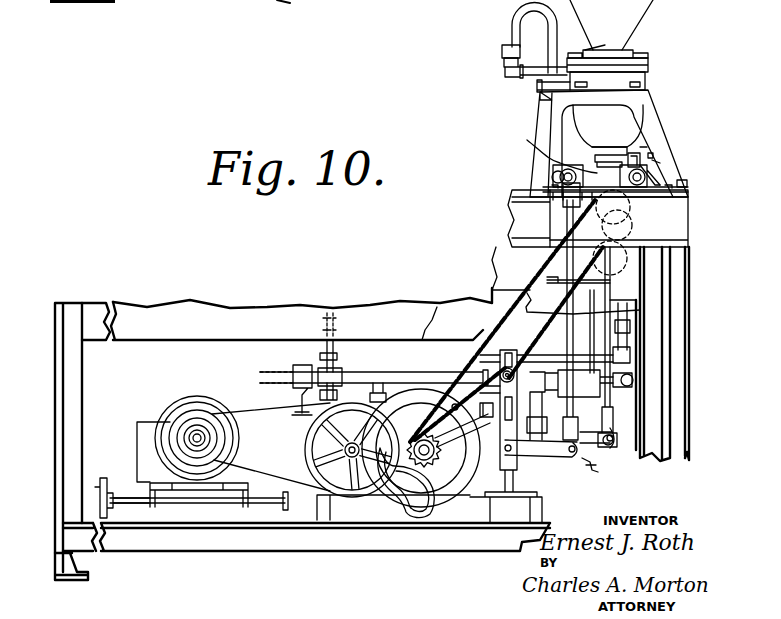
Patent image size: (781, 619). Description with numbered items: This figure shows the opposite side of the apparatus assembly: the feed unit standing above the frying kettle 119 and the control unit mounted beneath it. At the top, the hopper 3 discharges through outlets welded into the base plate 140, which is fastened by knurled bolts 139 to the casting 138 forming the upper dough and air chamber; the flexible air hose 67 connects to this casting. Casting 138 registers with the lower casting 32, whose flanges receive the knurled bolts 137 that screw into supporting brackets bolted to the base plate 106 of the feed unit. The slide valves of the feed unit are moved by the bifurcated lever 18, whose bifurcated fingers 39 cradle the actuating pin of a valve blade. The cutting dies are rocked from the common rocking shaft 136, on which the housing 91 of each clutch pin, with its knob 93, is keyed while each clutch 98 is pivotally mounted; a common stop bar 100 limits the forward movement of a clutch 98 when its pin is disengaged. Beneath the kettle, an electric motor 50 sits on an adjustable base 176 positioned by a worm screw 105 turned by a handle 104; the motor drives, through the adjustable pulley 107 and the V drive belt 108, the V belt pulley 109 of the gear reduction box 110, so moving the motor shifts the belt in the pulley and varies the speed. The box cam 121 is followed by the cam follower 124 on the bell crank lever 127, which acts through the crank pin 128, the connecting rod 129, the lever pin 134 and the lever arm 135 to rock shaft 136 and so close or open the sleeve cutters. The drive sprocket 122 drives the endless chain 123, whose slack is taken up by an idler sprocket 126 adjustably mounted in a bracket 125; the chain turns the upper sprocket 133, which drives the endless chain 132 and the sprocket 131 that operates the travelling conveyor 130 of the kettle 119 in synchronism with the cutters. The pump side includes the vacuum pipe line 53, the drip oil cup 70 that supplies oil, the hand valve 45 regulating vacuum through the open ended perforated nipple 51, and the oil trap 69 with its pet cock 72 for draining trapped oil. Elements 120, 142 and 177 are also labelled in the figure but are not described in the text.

The hopper 3 is at (597, 25).
The bifurcated lever 18 is at (542, 105).
The lower casting 32 is at (608, 136).
The bifurcated fingers 39 is at (537, 85).
The hand valve 45 is at (300, 363).
The electric motor 50 is at (196, 396).
The open ended perforated nipple 51 is at (268, 372).
The vacuum pipe line 53 is at (437, 307).
The flexible air hose 67 is at (514, 20).
The oil trap 69 is at (565, 397).
The drip oil cup 70 is at (347, 323).
The pet cock 72 is at (590, 472).
The housing 91 is at (658, 165).
The knob 93 is at (660, 160).
The clutch 98 is at (645, 155).
The common stop bar 100 is at (645, 150).
The handle 104 is at (98, 490).
The worm screw 105 is at (172, 503).
The base plate 106 is at (512, 195).
The adjustable pulley 107 is at (185, 428).
The V drive belt 108 is at (275, 455).
The V belt pulley 109 is at (332, 494).
The gear reduction box 110 is at (420, 454).
The frying kettle 119 is at (520, 208).
The platform 120 is at (393, 507).
The box cam 121 is at (407, 505).
The drive sprocket 122 is at (427, 467).
The endless chain 123 is at (510, 250).
The cam follower 124 is at (445, 372).
The bracket 125 is at (530, 470).
The idler sprocket 126 is at (473, 338).
The bell crank lever 127 is at (572, 460).
The crank pin 128 is at (585, 452).
The connecting rod 129 is at (623, 417).
The travelling conveyor 130 is at (492, 290).
The sprocket 131 is at (627, 258).
The endless chain 132 is at (632, 228).
The upper sprocket 133 is at (630, 210).
The lever pin 134 is at (556, 176).
The lever arm 135 is at (527, 140).
The common rocking shaft 136 is at (650, 172).
The knurled bolts 137 is at (645, 80).
The casting 138 is at (648, 66).
The knurled bolts 139 is at (640, 52).
The base plate 140 is at (620, 40).
The fitting 142 is at (502, 50).
The adjustable base 176 is at (146, 483).
The bar 177 is at (530, 186).